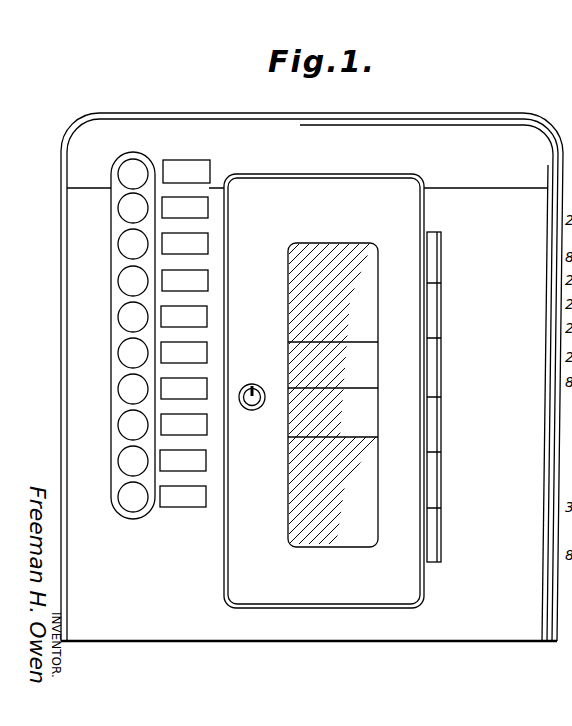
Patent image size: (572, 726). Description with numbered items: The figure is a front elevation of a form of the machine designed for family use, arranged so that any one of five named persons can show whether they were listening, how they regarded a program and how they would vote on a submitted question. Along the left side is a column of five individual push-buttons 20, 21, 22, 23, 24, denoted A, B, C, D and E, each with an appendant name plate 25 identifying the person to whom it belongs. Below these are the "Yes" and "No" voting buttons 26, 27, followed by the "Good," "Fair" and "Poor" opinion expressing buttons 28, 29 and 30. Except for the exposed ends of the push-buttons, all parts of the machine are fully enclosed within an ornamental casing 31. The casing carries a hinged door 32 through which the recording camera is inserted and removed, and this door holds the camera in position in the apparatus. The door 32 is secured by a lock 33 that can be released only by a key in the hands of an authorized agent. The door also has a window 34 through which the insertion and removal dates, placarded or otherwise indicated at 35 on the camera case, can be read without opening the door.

The push-button 20 is at (118, 174).
The push-button 21 is at (118, 208).
The push-button 22 is at (118, 243).
The push-button 23 is at (118, 281).
The push-button 24 is at (118, 317).
The name plates 25 is at (216, 161).
The voting button 26 is at (118, 353).
The voting button 27 is at (118, 389).
The opinion expressing button 28 is at (118, 425).
The opinion expressing button 29 is at (118, 461).
The opinion expressing button 30 is at (118, 497).
The casing 31 is at (463, 123).
The hinged door 32 is at (324, 391).
The lock 33 is at (252, 411).
The window 34 is at (312, 500).
The insertion and removal dates 35 is at (300, 333).